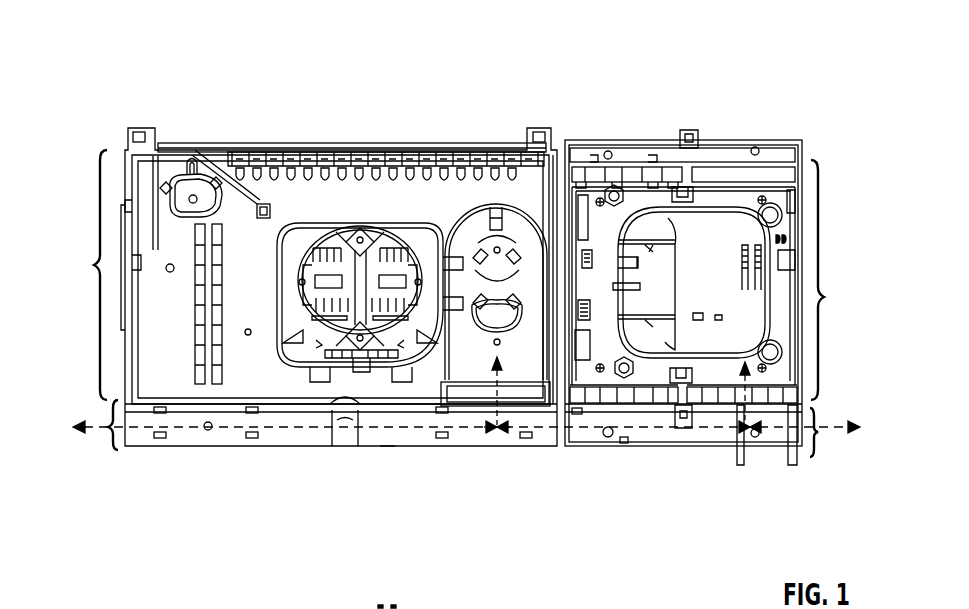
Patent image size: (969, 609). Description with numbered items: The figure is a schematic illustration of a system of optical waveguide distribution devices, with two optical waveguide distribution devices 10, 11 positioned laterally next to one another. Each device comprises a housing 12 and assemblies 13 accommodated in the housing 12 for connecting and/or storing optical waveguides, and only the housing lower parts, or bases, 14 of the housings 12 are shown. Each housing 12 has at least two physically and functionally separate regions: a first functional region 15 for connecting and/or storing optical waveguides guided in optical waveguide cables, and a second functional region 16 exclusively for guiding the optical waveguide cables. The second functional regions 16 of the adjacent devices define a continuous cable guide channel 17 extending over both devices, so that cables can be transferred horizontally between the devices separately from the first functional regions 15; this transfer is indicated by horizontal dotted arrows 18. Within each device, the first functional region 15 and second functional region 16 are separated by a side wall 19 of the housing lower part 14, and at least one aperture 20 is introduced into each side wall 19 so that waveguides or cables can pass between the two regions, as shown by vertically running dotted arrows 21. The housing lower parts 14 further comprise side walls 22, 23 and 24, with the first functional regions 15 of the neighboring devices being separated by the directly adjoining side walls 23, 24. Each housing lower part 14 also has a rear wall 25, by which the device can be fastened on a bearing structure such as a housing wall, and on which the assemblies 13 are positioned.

The optical waveguide distribution device 10 is at (400, 130).
The optical waveguide distribution device 11 is at (633, 130).
The housing 12 is at (459, 283).
The assemblies 13 is at (473, 250).
The housing lower part 14 is at (164, 247).
The first functional region 15 is at (459, 275).
The second functional region 16 is at (108, 427).
The continuous cable guide channel 17 is at (230, 417).
The dotted arrows 18 is at (388, 442).
The side wall 19 is at (290, 408).
The aperture 20 is at (466, 404).
The dotted arrows 21 is at (500, 392).
The side wall 22 is at (229, 133).
The side wall 23 is at (140, 212).
The side wall 24 is at (556, 218).
The rear wall 25 is at (244, 331).